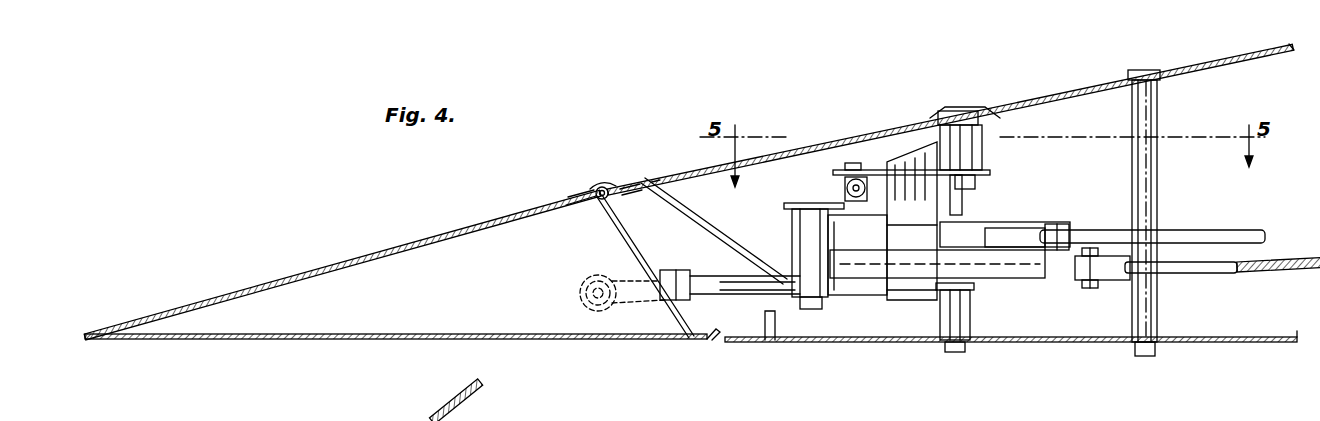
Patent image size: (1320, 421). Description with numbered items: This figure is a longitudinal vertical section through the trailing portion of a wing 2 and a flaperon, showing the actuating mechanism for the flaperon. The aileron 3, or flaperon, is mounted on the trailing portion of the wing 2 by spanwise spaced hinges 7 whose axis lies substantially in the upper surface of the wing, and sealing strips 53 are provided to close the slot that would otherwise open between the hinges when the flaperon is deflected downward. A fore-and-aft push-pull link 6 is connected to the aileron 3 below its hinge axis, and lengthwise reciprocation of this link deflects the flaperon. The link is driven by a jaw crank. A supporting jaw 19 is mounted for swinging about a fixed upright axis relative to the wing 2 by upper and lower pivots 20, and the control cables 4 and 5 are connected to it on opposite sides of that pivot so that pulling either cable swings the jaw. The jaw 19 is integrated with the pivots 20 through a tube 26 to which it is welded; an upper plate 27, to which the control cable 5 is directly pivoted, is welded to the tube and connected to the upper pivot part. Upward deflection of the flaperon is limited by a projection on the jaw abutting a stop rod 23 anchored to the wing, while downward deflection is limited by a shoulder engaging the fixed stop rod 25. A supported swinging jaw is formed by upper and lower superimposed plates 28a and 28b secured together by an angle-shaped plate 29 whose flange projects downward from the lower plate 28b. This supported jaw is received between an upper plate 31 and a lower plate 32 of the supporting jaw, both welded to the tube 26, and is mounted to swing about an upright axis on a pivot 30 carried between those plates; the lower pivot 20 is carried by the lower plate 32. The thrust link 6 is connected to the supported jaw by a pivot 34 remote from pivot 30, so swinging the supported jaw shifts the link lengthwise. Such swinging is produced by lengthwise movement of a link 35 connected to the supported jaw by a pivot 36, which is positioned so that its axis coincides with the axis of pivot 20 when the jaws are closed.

The wing 2 is at (1072, 94).
The aileron 3 is at (357, 262).
The control cable 4 is at (1268, 270).
The control cable 5 is at (846, 192).
The push-pull link 6 is at (724, 275).
The hinge 7 is at (601, 186).
The supporting jaw 19 is at (1072, 272).
The pivot 20 is at (984, 102).
The stop rod 23 is at (942, 112).
The stop rod 25 is at (1160, 168).
The tube 26 is at (910, 305).
The upper plate 27 is at (876, 172).
The upper plate 28a is at (1005, 222).
The lower plate 28b is at (1088, 230).
The plate 29 is at (985, 270).
The pivot 30 is at (812, 310).
The upper plate 31 is at (803, 202).
The lower plate 32 is at (860, 300).
The pivot 34 is at (1066, 224).
The link 35 is at (1226, 230).
The pivot 36 is at (958, 216).
The sealing strip 53 is at (584, 190).